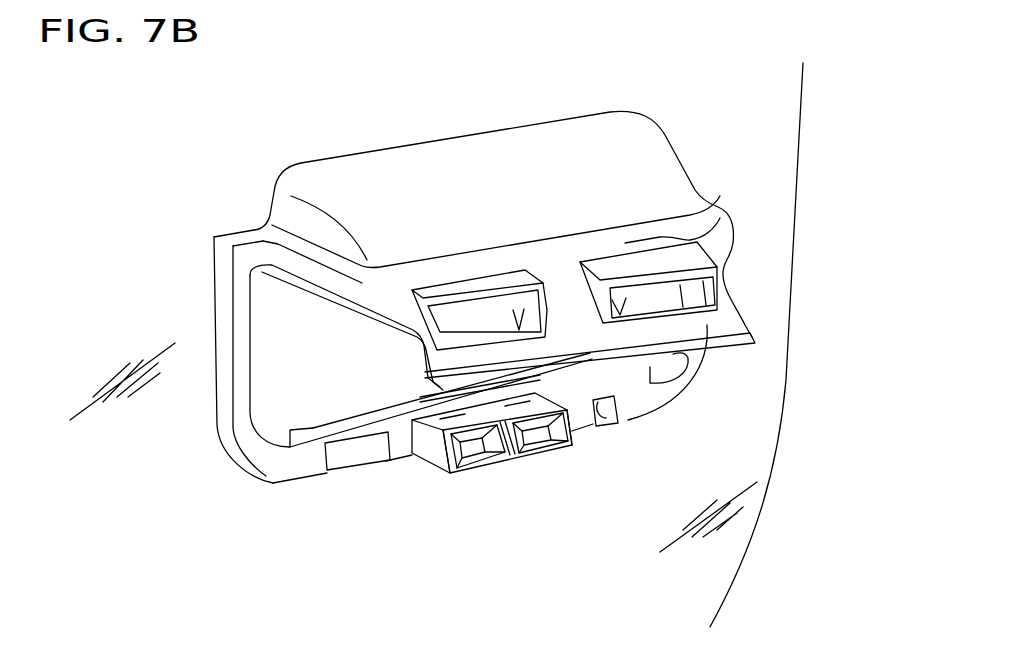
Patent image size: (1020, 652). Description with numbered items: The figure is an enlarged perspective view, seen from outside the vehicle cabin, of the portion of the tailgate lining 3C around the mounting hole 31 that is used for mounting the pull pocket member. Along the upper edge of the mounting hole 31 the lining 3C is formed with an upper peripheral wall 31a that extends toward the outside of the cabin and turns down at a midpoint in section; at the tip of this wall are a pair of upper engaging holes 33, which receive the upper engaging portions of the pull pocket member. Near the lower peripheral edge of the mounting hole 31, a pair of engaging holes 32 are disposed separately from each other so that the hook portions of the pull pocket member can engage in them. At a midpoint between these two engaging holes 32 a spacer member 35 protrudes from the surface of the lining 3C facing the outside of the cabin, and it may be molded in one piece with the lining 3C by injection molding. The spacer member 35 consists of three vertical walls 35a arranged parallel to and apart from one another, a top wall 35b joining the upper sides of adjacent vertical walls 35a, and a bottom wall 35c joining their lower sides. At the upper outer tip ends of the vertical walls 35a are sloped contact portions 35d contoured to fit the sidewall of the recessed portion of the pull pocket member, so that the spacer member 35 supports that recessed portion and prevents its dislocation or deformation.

The lining 3C is at (753, 140).
The mounting hole 31 is at (238, 380).
The upper peripheral wall 31a is at (574, 147).
The engaging holes 32 is at (358, 452).
The upper engaging holes 33 is at (618, 312).
The spacer member 35 is at (500, 479).
The vertical walls 35a is at (490, 463).
The top wall 35b is at (517, 405).
The bottom wall 35c is at (540, 452).
The contact portions 35d is at (452, 455).